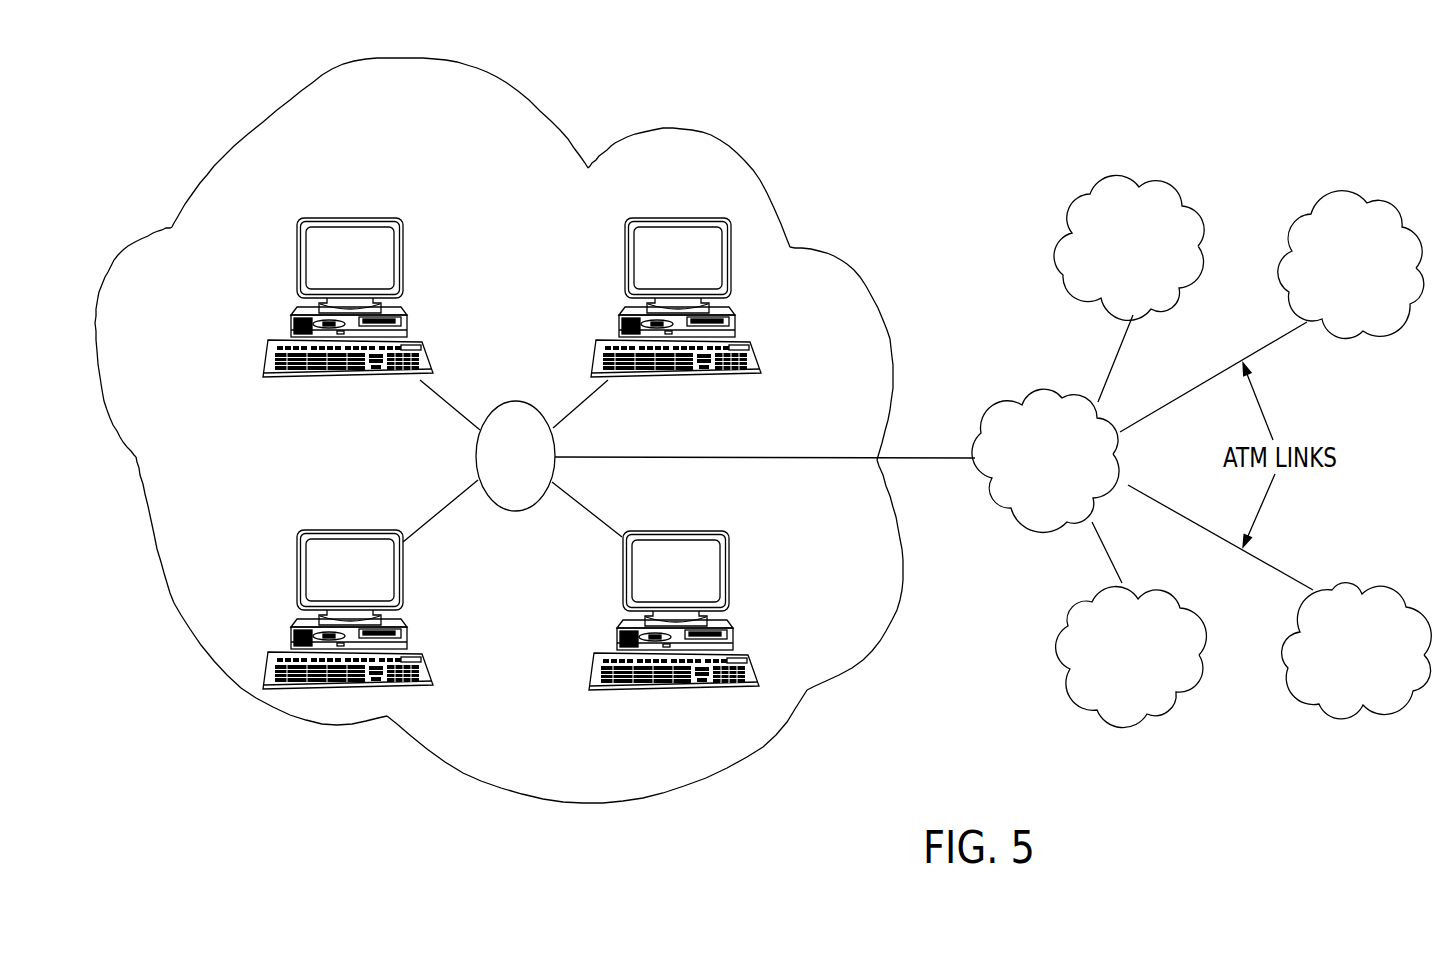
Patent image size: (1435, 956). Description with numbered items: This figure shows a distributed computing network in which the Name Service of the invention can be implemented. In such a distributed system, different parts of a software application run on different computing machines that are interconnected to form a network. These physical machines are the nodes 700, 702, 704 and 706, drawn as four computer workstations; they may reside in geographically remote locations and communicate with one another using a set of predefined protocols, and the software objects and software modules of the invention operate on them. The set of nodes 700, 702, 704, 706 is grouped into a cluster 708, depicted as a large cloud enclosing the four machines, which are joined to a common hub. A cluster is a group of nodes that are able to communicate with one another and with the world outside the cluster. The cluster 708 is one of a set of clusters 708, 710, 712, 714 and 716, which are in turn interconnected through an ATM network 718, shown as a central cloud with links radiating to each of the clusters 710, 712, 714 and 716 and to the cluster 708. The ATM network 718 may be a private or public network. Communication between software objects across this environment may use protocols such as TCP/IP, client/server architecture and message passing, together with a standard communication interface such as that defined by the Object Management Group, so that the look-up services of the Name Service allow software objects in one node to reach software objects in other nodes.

The node 700 is at (683, 530).
The node 702 is at (346, 529).
The node 704 is at (346, 217).
The node 706 is at (683, 218).
The cluster 708 is at (287, 98).
The cluster 710 is at (1113, 686).
The cluster 712 is at (1343, 678).
The cluster 714 is at (1333, 301).
The cluster 716 is at (1111, 279).
The ATM network 718 is at (1031, 499).